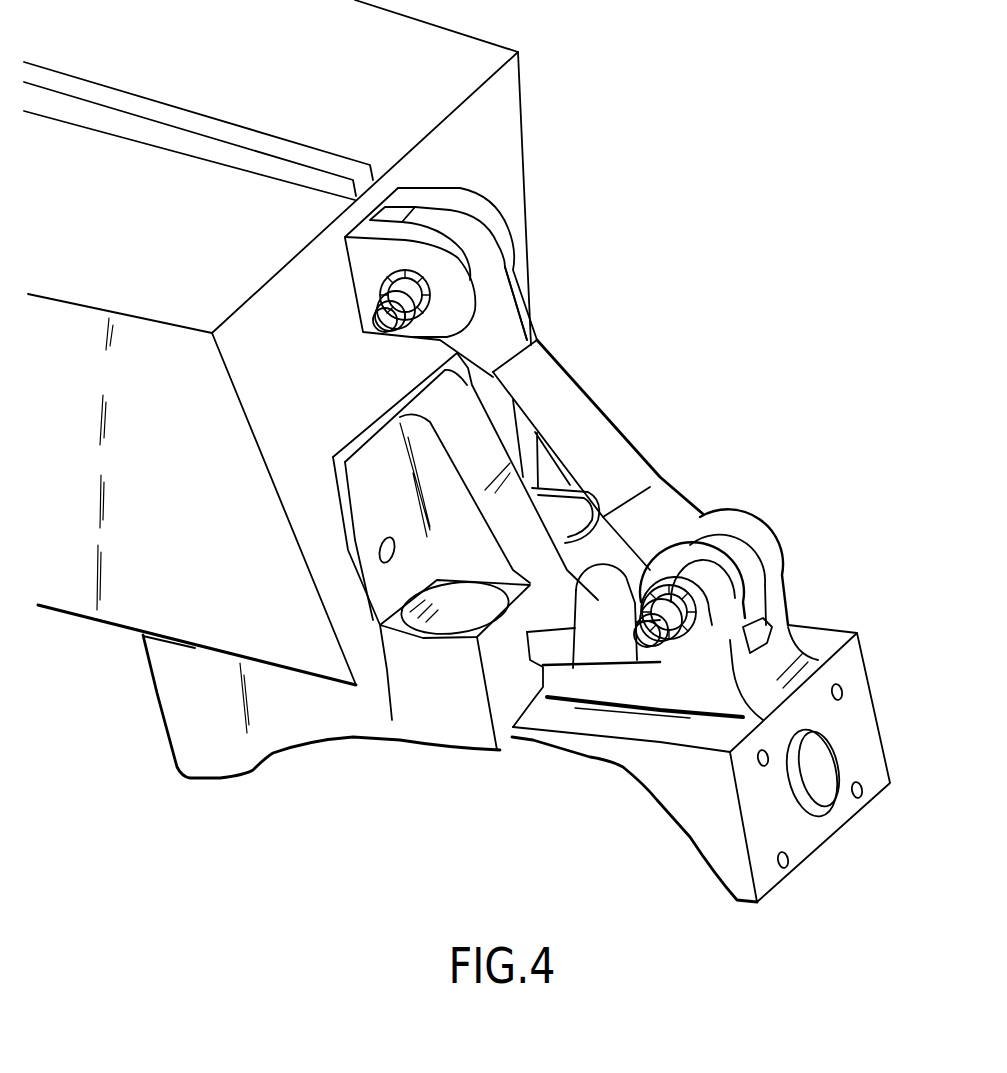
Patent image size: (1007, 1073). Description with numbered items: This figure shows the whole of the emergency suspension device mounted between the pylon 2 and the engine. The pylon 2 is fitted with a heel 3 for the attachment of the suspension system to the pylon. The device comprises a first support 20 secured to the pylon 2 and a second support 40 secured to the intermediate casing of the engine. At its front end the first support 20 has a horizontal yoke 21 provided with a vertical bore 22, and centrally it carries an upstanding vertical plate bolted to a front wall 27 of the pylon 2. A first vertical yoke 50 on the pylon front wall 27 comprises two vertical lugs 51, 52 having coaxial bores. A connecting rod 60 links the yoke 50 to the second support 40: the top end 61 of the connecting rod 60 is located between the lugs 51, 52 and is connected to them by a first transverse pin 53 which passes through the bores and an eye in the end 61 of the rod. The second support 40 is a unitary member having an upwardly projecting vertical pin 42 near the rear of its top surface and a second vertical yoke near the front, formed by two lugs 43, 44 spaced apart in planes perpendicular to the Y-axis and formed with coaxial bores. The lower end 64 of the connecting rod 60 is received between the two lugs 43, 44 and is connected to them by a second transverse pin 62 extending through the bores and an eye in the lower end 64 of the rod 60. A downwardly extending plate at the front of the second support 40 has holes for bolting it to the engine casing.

The pylon 2 is at (80, 597).
The heel 3 is at (222, 760).
The first support 20 is at (470, 435).
The horizontal yoke 21 is at (547, 643).
The vertical bore 22 is at (578, 625).
The front wall 27 is at (500, 152).
The second support 40 is at (828, 640).
The vertical pin 42 is at (603, 697).
The lug 43 is at (683, 557).
The lug 44 is at (732, 527).
The first vertical yoke 50 is at (520, 100).
The vertical lug 51 is at (467, 270).
The vertical lug 52 is at (490, 218).
The first transverse pin 53 is at (445, 318).
The connecting rod 60 is at (585, 428).
The top end 61 is at (537, 320).
The second transverse pin 62 is at (662, 632).
The lower end 64 is at (693, 615).